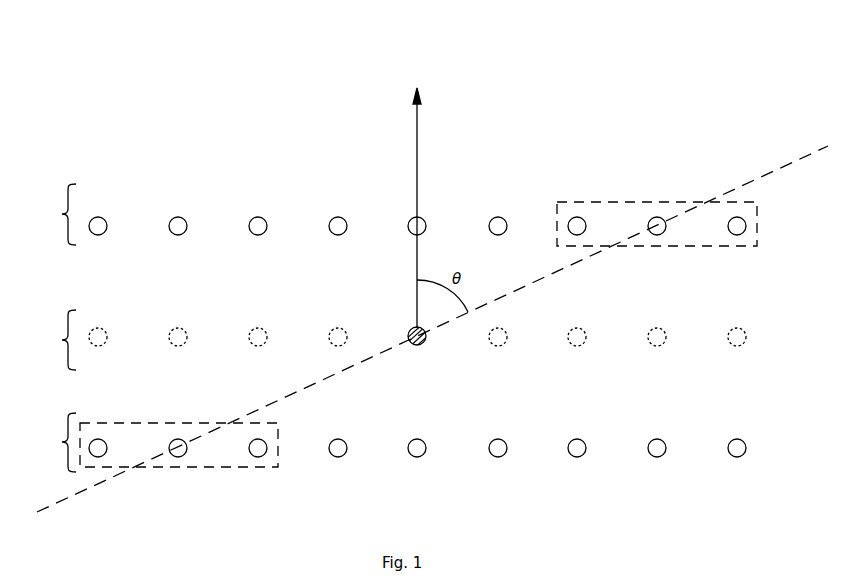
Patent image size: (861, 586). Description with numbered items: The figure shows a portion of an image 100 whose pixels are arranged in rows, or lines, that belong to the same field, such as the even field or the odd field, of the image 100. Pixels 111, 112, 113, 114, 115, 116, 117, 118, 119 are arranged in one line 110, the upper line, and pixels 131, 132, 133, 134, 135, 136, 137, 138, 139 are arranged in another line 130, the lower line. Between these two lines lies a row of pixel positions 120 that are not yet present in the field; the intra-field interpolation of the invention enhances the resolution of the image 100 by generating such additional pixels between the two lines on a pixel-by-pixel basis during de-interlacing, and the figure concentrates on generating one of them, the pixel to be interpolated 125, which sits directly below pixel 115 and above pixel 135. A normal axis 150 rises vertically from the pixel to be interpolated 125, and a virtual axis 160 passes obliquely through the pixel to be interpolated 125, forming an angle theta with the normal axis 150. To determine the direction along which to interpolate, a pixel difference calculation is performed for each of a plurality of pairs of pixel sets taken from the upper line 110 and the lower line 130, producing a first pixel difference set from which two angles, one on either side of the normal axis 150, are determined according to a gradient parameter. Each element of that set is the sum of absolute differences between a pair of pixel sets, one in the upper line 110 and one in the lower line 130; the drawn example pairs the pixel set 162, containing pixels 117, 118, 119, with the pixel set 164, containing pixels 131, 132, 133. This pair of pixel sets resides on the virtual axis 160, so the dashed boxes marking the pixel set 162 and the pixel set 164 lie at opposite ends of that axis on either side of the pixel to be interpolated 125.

The image 100 is at (758, 83).
The line 110 is at (57, 214).
The pixel 111 is at (97, 217).
The pixel 112 is at (177, 217).
The pixel 113 is at (257, 217).
The pixel 114 is at (337, 217).
The pixel 115 is at (416, 217).
The pixel 116 is at (497, 217).
The pixel 117 is at (576, 217).
The pixel 118 is at (656, 217).
The pixel 119 is at (737, 217).
The second row of antenna elements (virtual) 120 is at (57, 340).
The pixel to be interpolated 125 is at (424, 345).
The line 130 is at (57, 442).
The pixel 131 is at (100, 457).
The pixel 132 is at (180, 457).
The pixel 133 is at (260, 457).
The pixel 134 is at (340, 457).
The pixel 135 is at (419, 457).
The pixel 136 is at (500, 457).
The pixel 137 is at (579, 457).
The pixel 138 is at (659, 457).
The pixel 139 is at (739, 457).
The normal axis 150 is at (417, 133).
The virtual axis 160 is at (801, 160).
The pixel set 162 is at (757, 237).
The pixel set 164 is at (225, 470).